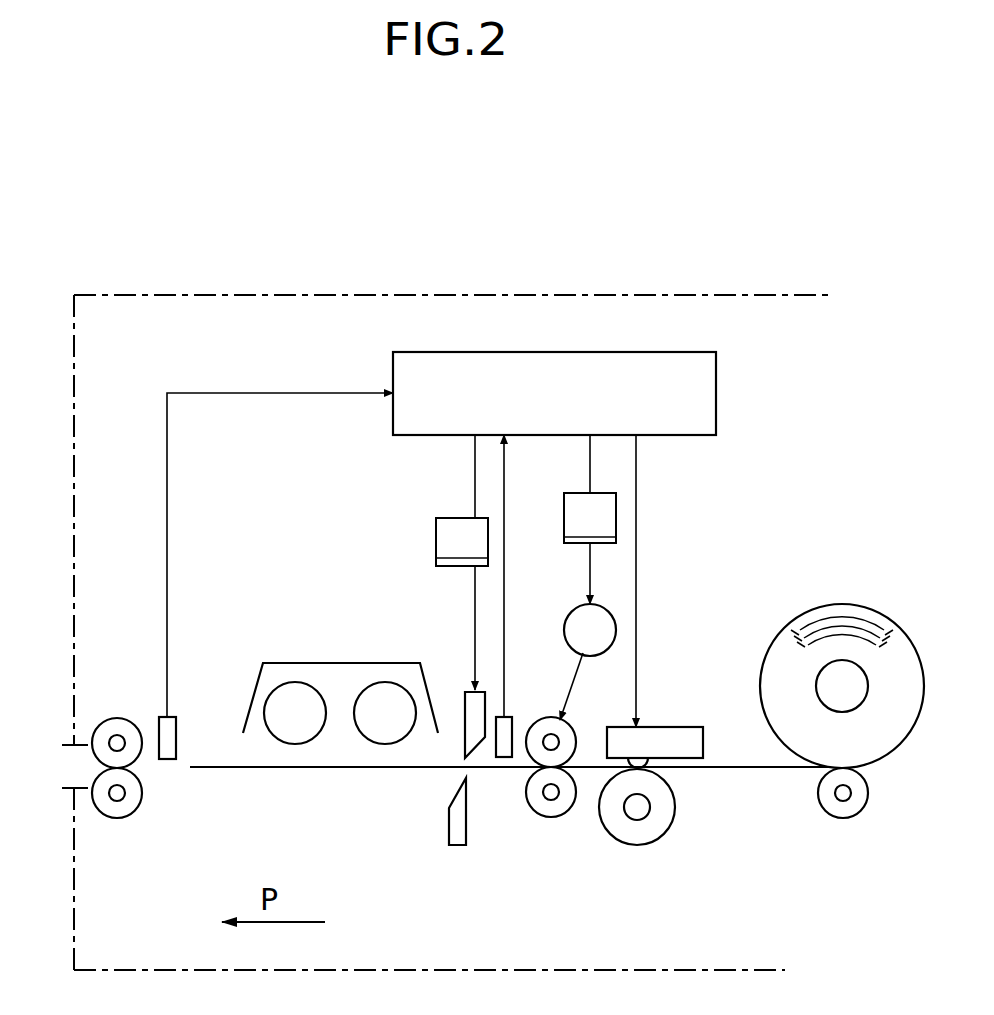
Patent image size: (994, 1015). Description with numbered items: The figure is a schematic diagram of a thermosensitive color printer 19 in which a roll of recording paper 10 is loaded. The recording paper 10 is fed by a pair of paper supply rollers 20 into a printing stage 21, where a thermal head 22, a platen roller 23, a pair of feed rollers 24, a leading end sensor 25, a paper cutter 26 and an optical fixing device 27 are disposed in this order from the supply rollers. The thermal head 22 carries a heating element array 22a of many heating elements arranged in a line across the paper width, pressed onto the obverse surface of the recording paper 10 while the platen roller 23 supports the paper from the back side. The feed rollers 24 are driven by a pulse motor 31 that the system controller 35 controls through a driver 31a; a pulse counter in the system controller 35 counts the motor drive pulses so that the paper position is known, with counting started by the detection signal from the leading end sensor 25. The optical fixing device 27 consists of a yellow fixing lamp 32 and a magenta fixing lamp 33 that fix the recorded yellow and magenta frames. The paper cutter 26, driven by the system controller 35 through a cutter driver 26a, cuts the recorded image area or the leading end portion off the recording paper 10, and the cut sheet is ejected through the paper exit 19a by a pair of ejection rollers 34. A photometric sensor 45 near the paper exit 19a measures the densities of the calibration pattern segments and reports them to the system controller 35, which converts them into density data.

The thermosensitive color printer 19 is at (538, 295).
The system controller 35 is at (682, 352).
The cutter driver 26a is at (462, 542).
The driver 31a is at (590, 518).
The pulse motor 31 is at (572, 612).
The optical fixing device 27 is at (302, 662).
The yellow fixing lamp 32 is at (387, 703).
The magenta fixing lamp 33 is at (280, 707).
The paper cutter 26 is at (466, 690).
The leading end sensor 25 is at (512, 712).
The feed rollers 24 is at (547, 818).
The printing stage 21 is at (672, 692).
The thermal head 22 is at (680, 727).
The heating element array 22a is at (627, 765).
The platen roller 23 is at (633, 845).
The paper supply rollers 20 is at (823, 810).
The recording paper 10 is at (305, 770).
The photometric sensor 45 is at (177, 727).
The paper exit 19a is at (80, 743).
The ejection rollers 34 is at (113, 817).